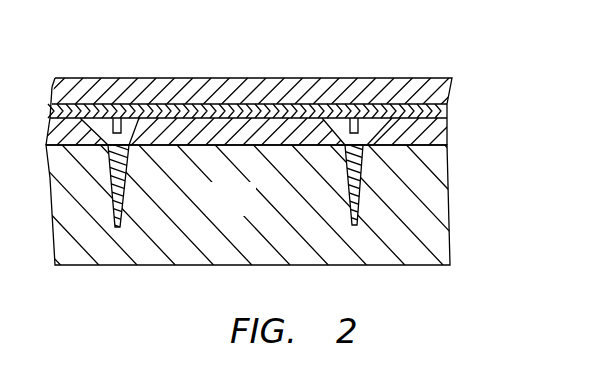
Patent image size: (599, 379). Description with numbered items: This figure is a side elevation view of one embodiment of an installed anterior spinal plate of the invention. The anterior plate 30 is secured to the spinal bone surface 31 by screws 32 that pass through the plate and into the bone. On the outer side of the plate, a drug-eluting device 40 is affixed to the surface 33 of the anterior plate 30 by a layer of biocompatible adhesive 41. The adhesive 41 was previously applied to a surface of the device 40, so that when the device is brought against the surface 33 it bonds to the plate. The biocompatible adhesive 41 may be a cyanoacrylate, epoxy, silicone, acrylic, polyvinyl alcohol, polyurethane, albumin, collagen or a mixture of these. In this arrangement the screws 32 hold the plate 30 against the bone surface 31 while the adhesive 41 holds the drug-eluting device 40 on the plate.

The anterior plate 30 is at (446, 132).
The spinal bone surface 31 is at (210, 212).
The screws 32 is at (360, 193).
The surface of plate 33 is at (74, 106).
The drug-eluting device 40 is at (440, 79).
The biocompatible adhesive 41 is at (447, 114).